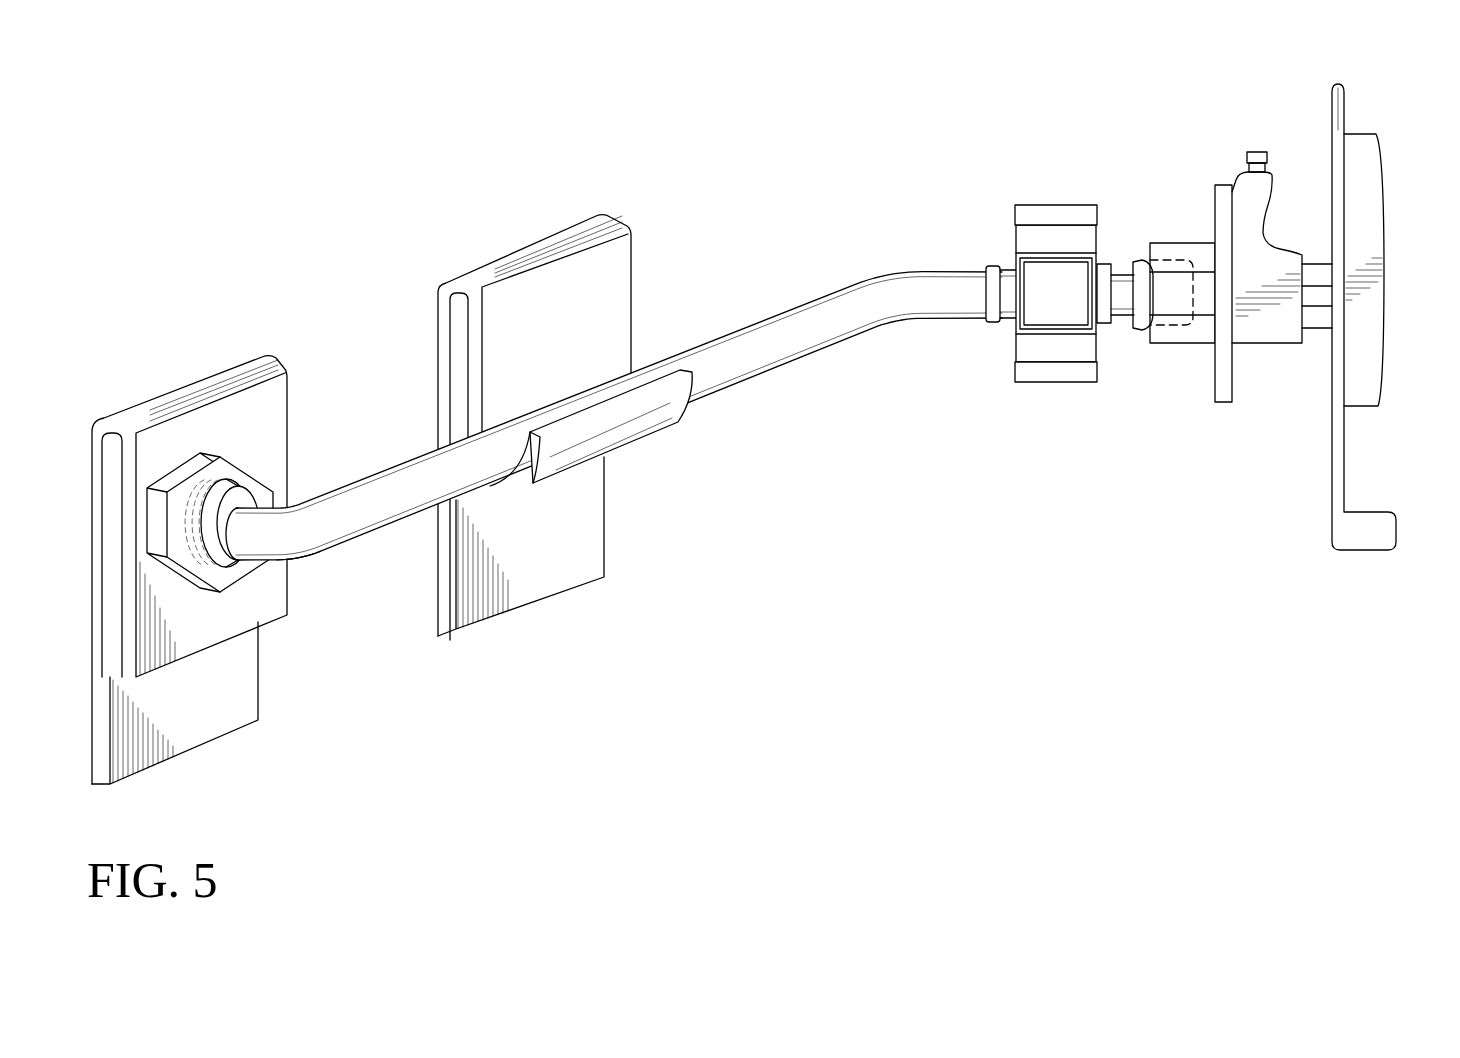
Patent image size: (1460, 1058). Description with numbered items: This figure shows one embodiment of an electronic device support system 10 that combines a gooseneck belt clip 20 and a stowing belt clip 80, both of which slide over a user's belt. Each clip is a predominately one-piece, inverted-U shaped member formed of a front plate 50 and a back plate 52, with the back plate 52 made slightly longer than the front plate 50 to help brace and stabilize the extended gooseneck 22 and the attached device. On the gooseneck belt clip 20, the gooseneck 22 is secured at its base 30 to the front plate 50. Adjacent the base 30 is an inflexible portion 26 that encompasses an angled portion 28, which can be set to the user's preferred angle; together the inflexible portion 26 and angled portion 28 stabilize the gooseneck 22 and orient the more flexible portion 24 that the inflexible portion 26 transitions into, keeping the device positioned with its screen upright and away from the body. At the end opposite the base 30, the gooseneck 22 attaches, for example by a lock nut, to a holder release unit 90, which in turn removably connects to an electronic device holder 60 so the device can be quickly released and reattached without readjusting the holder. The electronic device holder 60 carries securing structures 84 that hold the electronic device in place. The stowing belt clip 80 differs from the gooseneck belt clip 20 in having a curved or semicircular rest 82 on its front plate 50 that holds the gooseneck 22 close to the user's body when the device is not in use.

The electronic device support system 10 is at (884, 142).
The gooseneck belt clip 20 is at (202, 340).
The gooseneck 22 is at (838, 292).
The flexible portion 24 is at (762, 378).
The inflexible portion 26 is at (248, 490).
The angled portion 28 is at (296, 561).
The base 30 is at (200, 480).
The front plate 50 is at (260, 605).
The back plate 52 is at (190, 726).
The electronic device holder 60 is at (1332, 487).
The stowing belt clip 80 is at (522, 258).
The rest 82 is at (640, 428).
The securing structures 84 is at (1377, 204).
The holder release unit 90 is at (1255, 330).